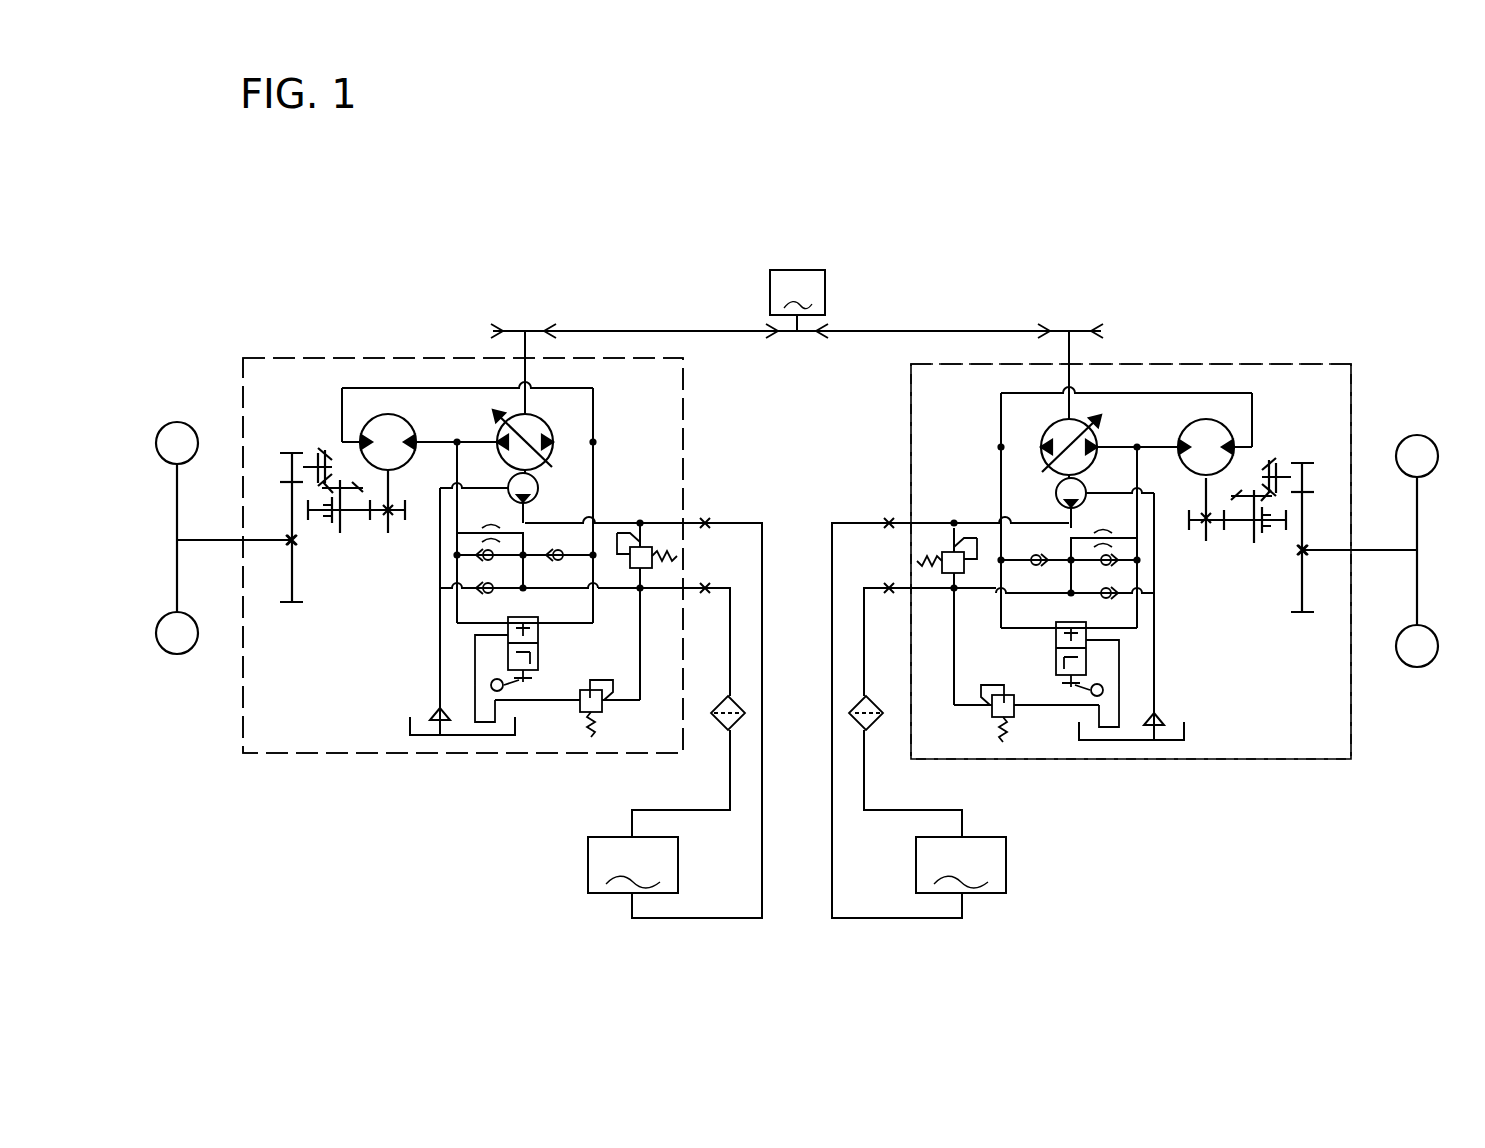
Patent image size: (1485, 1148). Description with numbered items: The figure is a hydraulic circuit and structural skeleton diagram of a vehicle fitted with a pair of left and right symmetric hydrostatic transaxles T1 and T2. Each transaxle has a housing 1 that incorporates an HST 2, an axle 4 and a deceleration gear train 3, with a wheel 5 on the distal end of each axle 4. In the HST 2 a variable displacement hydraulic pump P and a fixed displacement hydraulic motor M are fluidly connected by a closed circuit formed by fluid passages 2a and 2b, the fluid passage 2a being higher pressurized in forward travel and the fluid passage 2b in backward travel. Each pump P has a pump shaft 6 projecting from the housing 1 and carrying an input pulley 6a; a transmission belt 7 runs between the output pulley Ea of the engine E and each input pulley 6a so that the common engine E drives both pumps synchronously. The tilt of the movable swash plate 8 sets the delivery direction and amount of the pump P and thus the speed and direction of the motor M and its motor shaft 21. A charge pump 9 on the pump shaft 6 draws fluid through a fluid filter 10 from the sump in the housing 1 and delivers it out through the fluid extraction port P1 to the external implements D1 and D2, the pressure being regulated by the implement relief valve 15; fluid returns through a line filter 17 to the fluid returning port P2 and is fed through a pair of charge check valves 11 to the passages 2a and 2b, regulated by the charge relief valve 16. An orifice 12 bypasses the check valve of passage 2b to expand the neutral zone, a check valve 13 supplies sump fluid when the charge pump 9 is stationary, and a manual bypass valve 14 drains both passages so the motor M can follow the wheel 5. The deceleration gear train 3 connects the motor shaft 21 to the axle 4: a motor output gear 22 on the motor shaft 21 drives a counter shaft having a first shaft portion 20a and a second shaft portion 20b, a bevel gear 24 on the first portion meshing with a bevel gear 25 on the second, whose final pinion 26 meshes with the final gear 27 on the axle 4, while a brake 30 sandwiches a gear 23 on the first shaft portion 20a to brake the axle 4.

The housing 1 is at (276, 755).
The HST 2 is at (431, 359).
The fluid passage 2a is at (595, 402).
The fluid passage 2b is at (414, 441).
The deceleration gear train 3 is at (349, 604).
The axle 4 is at (220, 538).
The wheel 5 is at (178, 421).
The pump shaft 6 is at (515, 347).
The input pulley 6a is at (520, 326).
The transmission belt 7 is at (672, 330).
The movable swash plate 8 is at (490, 412).
The charge pump 9 is at (540, 488).
The fluid filter 10 is at (440, 740).
The charge check valve 11 is at (492, 595).
The orifice 12 is at (490, 522).
The check valve 13 is at (484, 560).
The bypass valve 14 is at (540, 640).
The implement relief valve 15 is at (648, 572).
The charge relief valve 16 is at (578, 705).
The line filter 17 is at (725, 733).
The first shaft portion 20a is at (340, 535).
The second shaft portion 20b is at (317, 450).
The motor shaft 21 is at (392, 487).
The motor output gear 22 is at (396, 522).
The gear 23 is at (358, 520).
The bevel gear 24 is at (333, 484).
The bevel gear 25 is at (324, 446).
The final pinion 26 is at (296, 463).
The final gear 27 is at (288, 573).
The brake 30 is at (315, 522).
The hydraulic motor M is at (369, 417).
The hydraulic pump P is at (555, 427).
The engine E is at (797, 300).
The output pulley Ea is at (788, 336).
The fluid extraction port P1 is at (705, 528).
The fluid returning port P2 is at (705, 594).
The hydraulically driven implement D1 is at (633, 865).
The hydraulically driven implement D2 is at (961, 865).
The left transaxle T1 is at (357, 788).
The right transaxle T2 is at (1237, 794).